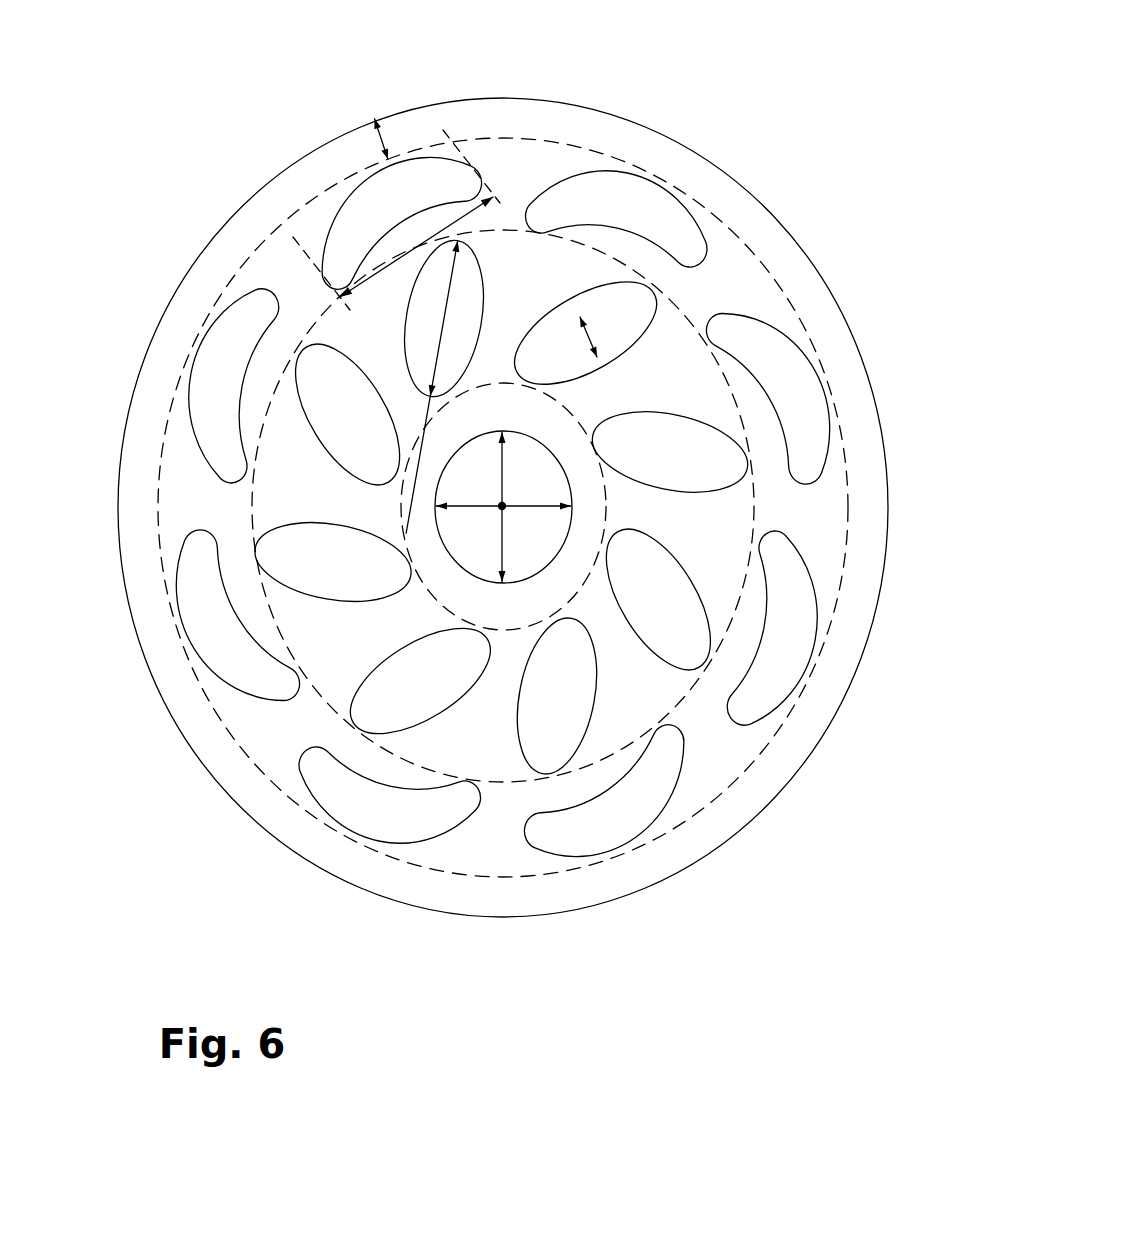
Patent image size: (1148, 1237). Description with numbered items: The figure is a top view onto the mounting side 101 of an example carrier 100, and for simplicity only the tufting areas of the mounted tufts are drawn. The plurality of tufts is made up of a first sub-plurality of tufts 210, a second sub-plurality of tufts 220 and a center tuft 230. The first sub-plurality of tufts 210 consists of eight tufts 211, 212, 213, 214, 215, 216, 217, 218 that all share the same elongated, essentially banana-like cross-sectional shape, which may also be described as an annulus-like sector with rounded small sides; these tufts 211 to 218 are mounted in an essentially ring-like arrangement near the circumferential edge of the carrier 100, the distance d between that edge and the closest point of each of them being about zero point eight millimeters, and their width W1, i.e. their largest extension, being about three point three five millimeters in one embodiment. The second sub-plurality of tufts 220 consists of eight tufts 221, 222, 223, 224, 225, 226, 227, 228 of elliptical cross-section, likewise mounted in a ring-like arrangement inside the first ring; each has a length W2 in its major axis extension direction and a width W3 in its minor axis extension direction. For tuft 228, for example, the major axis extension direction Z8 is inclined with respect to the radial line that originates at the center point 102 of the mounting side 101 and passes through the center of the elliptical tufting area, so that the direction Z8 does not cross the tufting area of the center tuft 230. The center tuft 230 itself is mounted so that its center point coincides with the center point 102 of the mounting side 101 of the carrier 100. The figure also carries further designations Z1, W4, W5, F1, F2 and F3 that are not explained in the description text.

The carrier 100 is at (764, 94).
The mounting side 101 is at (817, 690).
The center point 102 is at (502, 506).
The first sub-plurality of tufts 210 is at (778, 282).
The tuft 211 is at (602, 170).
The tuft 212 is at (836, 442).
The tuft 213 is at (813, 578).
The tuft 214 is at (675, 797).
The tuft 215 is at (420, 867).
The tuft 216 is at (223, 683).
The tuft 217 is at (188, 418).
The tuft 218 is at (332, 226).
The second sub-plurality of tufts 220 is at (675, 705).
The tuft 221 is at (408, 432).
The tuft 222 is at (733, 483).
The tuft 223 is at (667, 692).
The tuft 224 is at (533, 765).
The tuft 225 is at (343, 707).
The tuft 226 is at (258, 540).
The tuft 227 is at (314, 345).
The tuft 228 is at (533, 300).
The center tuft 230 is at (524, 583).
The zone 1 Z1 is at (578, 362).
The major axis extension direction Z8 is at (432, 494).
The width W1 is at (388, 268).
The length W2 is at (453, 333).
The width W3 is at (600, 352).
The central opening height W4 is at (506, 540).
The central opening width W5 is at (531, 507).
The slot surface F1 is at (333, 238).
The elliptical opening surface F2 is at (642, 284).
The central opening surface F3 is at (530, 468).
The distance d is at (382, 140).